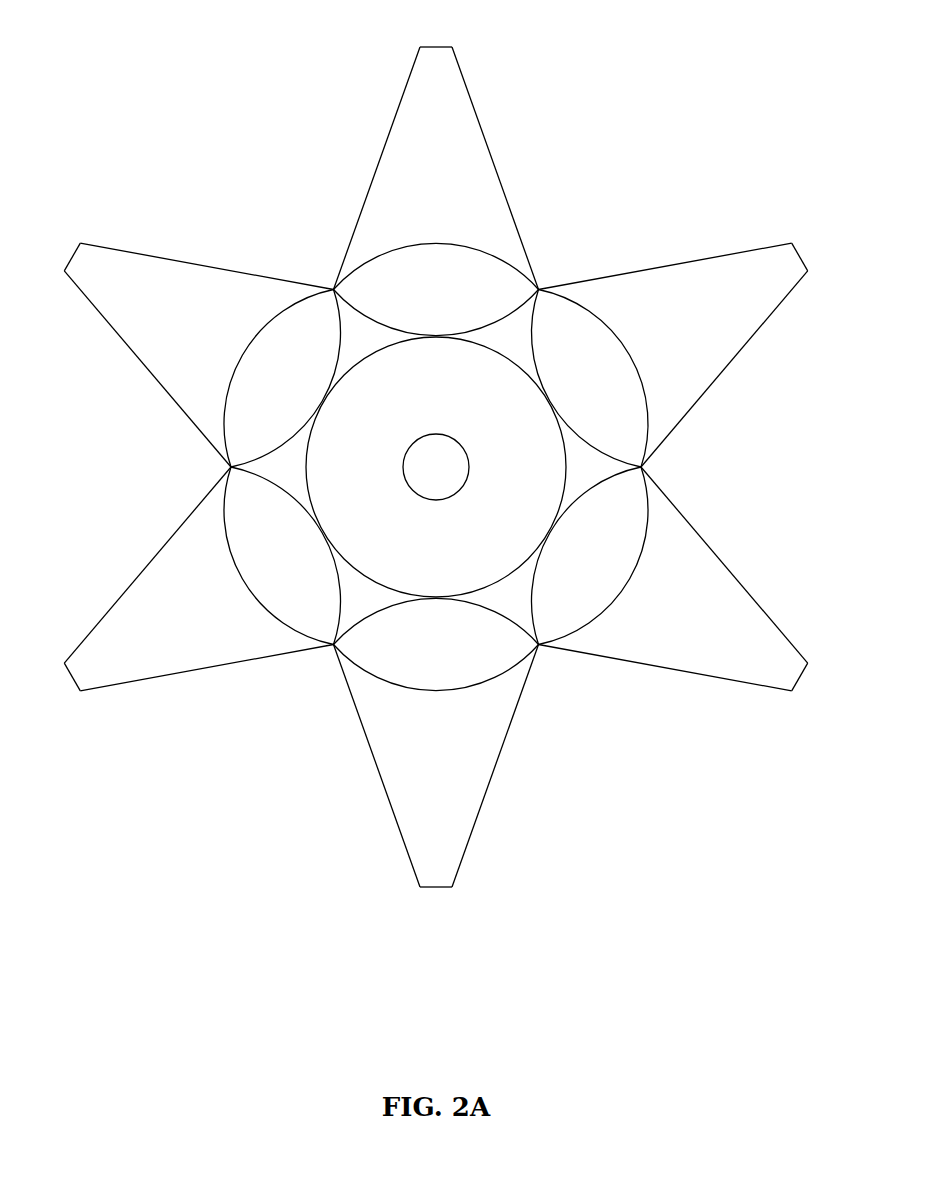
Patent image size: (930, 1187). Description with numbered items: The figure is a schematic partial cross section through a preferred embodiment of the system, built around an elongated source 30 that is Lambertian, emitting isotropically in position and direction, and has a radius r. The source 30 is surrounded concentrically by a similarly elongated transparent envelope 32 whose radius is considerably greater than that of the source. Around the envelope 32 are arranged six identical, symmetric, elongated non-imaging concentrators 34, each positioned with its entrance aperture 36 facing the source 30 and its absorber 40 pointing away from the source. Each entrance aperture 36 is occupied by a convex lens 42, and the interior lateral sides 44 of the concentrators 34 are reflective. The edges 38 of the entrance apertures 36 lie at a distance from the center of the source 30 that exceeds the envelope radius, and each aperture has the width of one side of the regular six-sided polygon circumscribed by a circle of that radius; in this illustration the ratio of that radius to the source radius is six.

The source 30 is at (423, 479).
The transparent envelope 32 is at (349, 375).
The non-imaging concentrator 34 is at (423, 137).
The entrance aperture 36 is at (458, 283).
The edge of entrance aperture 38 is at (331, 285).
The absorber 40 is at (802, 256).
The convex lens 42 is at (410, 302).
The interior lateral side 44 is at (363, 211).